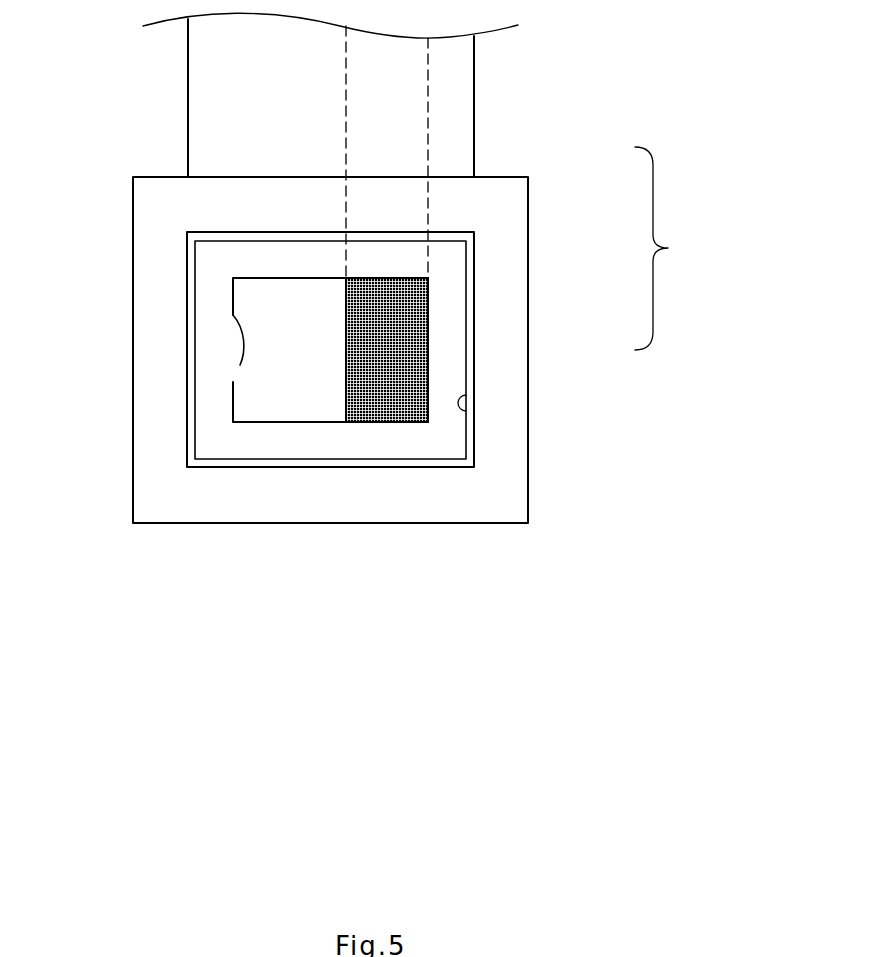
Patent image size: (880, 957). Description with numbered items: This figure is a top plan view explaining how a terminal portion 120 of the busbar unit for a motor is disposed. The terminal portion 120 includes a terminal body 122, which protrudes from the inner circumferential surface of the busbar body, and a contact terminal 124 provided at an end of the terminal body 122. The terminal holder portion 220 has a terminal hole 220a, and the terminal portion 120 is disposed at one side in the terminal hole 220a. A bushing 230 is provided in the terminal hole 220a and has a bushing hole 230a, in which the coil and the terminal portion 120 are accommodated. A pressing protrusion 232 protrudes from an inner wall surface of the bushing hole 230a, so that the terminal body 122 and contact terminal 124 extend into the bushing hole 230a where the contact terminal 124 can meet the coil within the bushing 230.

The terminal portion 120 is at (677, 248).
The terminal body 122 is at (427, 147).
The contact terminal 124 is at (397, 349).
The terminal holder portion 220 is at (453, 84).
The terminal hole 220a is at (466, 411).
The bushing 230 is at (417, 447).
The bushing hole 230a is at (311, 398).
The pressing protrusion 232 is at (240, 365).